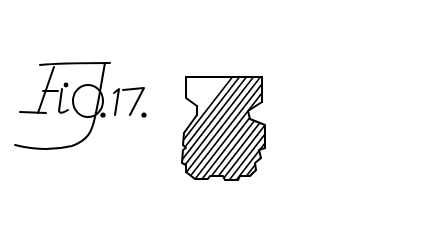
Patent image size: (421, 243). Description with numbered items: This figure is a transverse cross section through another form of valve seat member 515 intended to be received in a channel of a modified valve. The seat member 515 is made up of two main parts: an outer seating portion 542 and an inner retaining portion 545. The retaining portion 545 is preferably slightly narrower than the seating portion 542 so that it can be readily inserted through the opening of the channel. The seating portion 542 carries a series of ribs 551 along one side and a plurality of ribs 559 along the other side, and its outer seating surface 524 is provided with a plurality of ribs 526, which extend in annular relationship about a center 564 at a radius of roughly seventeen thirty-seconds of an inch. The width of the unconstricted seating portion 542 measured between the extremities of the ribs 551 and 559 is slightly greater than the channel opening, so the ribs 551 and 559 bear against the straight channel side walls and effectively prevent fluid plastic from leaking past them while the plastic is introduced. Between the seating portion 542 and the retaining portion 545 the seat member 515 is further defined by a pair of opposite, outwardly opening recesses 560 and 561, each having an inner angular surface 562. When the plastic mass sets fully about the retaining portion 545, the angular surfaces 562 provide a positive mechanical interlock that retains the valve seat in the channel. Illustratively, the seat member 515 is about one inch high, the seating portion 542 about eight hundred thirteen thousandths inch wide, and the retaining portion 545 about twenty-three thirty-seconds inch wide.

The valve seat member 515 is at (283, 83).
The inner retaining portion 545 is at (232, 78).
The inner angular surface 562 is at (185, 103).
The center 564 is at (212, 118).
The outwardly opening recess 561 is at (185, 128).
The ribs 551 is at (183, 157).
The ribs 526 is at (242, 178).
The outer seating surface 524 is at (253, 178).
The outer seating portion 542 is at (257, 170).
The ribs 559 is at (265, 160).
The outwardly opening recess 560 is at (259, 114).